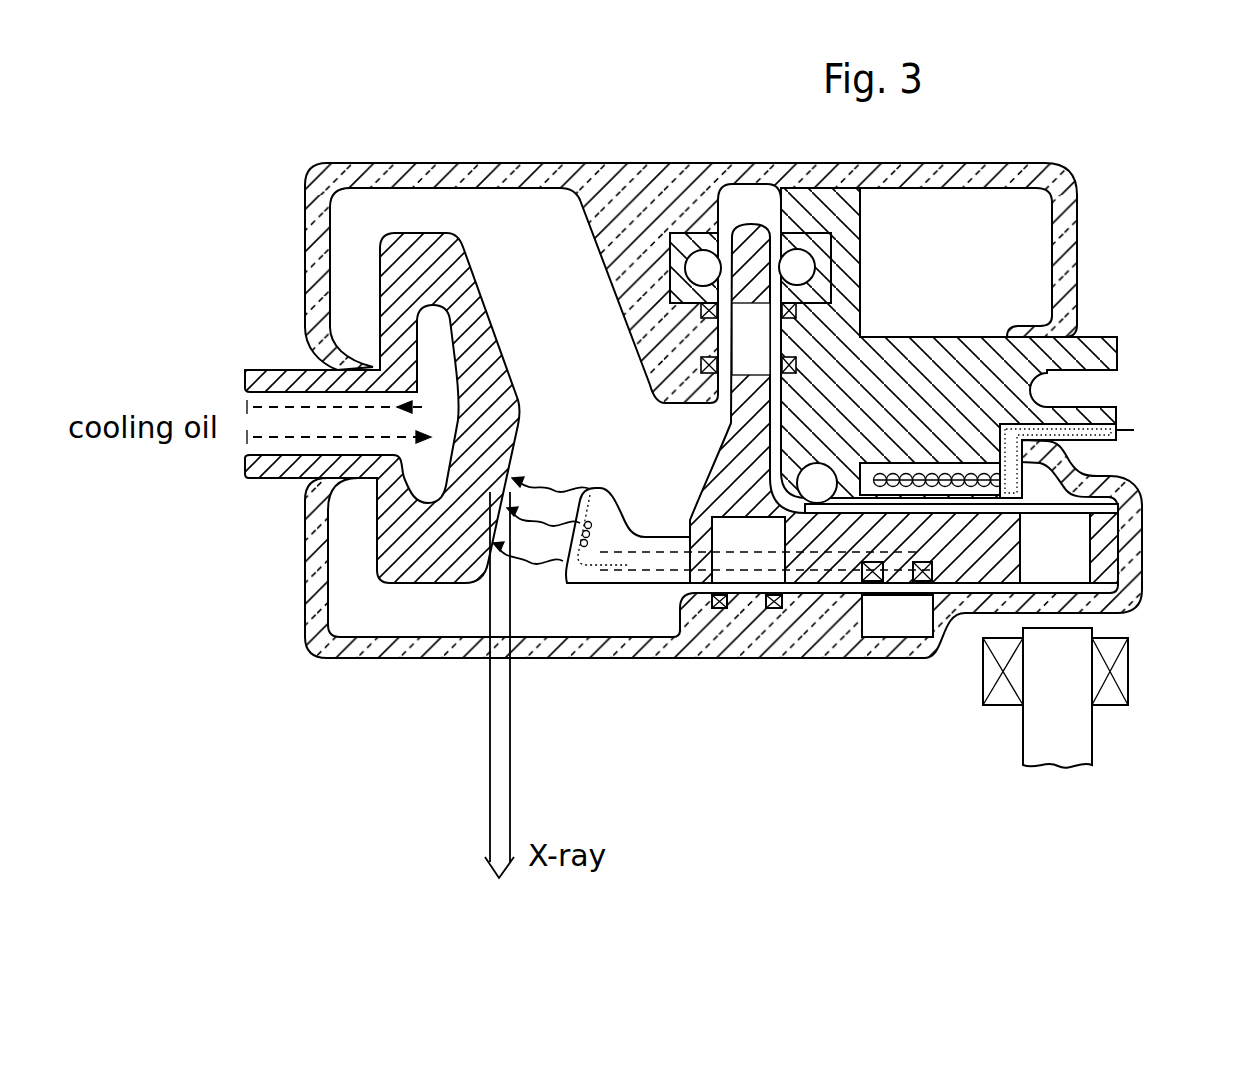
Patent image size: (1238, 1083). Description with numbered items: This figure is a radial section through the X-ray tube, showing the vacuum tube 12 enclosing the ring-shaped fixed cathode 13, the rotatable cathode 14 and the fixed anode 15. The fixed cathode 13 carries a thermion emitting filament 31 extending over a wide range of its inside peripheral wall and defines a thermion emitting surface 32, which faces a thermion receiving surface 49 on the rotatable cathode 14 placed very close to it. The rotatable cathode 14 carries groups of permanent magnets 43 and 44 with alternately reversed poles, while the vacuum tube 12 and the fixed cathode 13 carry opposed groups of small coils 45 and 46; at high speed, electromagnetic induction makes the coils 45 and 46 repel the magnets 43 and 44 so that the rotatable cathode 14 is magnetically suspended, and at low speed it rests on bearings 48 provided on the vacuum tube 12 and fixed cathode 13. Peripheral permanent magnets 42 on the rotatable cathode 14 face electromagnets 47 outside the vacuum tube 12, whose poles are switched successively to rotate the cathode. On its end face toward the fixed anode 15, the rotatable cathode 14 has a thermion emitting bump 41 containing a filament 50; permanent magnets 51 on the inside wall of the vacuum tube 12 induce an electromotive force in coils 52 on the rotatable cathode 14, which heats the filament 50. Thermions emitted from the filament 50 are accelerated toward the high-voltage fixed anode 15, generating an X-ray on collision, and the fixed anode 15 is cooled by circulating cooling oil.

The vacuum tube 12 is at (615, 178).
The fixed cathode 13 is at (947, 345).
The rotatable cathode 14 is at (653, 583).
The fixed anode 15 is at (395, 577).
The thermion emitting filament 31 is at (1007, 481).
The thermion emitting surface 32 is at (1116, 499).
The thermion emitting bump 41 is at (580, 588).
The permanent magnets 42 is at (1090, 560).
The permanent magnets 43 is at (800, 565).
The permanent magnets 44 is at (731, 418).
The coils 45 is at (773, 610).
The coils 46 is at (701, 365).
The electromagnets 47 is at (1092, 730).
The bearings 48 is at (703, 252).
The thermion receiving surface 49 is at (960, 515).
The filament 50 is at (590, 488).
The permanent magnets 51 is at (875, 640).
The coils 52 is at (928, 583).